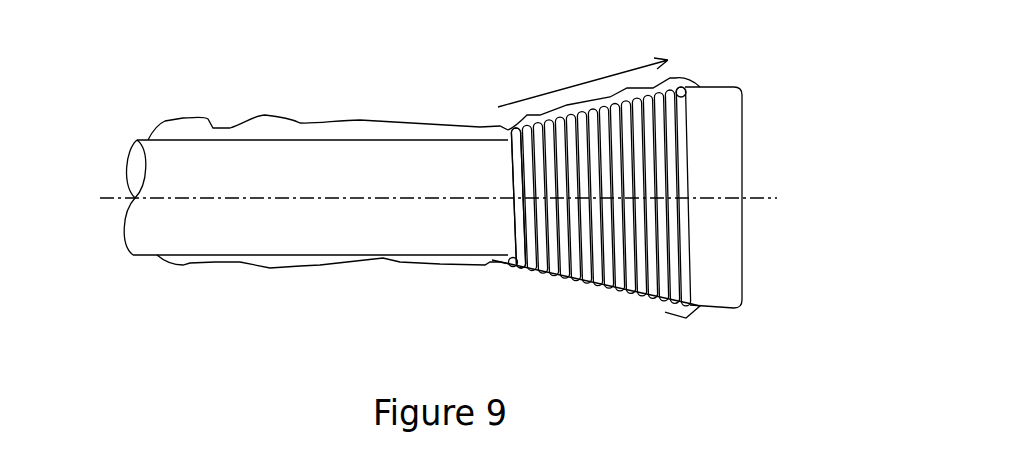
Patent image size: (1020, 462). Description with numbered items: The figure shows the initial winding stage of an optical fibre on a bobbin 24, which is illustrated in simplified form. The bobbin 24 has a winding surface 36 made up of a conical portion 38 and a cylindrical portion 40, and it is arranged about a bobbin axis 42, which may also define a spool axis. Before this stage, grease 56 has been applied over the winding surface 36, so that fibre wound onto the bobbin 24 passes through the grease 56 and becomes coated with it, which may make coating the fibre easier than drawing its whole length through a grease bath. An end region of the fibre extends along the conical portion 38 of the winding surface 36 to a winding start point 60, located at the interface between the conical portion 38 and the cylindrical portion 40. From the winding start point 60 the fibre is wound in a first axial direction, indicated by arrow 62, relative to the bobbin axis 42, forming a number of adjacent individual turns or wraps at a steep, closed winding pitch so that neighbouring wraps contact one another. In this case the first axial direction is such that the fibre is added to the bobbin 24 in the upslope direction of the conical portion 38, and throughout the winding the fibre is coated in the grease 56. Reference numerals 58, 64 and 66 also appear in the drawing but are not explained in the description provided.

The bobbin 24 is at (188, 141).
The winding surface 36 is at (223, 257).
The conical portion 38 is at (718, 120).
The cylindrical portion 40 is at (262, 160).
The bobbin axis 42 is at (110, 196).
The grease 56 is at (557, 284).
The first coil 58 is at (502, 122).
The winding start point 60 is at (507, 268).
The arrow 62 is at (568, 82).
The wire end 64 is at (676, 84).
The coil spring 66 is at (600, 292).